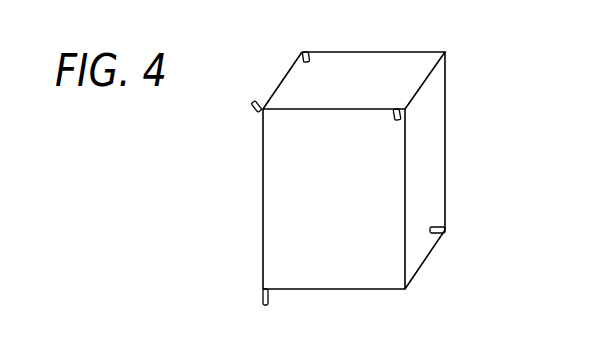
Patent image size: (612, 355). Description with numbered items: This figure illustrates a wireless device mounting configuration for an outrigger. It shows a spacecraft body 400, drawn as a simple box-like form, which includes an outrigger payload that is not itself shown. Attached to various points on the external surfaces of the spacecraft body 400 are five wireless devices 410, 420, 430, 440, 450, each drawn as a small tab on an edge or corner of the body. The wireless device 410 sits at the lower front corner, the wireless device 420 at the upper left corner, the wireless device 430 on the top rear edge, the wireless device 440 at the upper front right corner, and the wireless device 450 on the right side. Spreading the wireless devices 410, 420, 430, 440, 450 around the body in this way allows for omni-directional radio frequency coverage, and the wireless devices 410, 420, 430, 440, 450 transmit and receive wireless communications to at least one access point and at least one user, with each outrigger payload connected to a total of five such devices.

The spacecraft body 400 is at (354, 206).
The wireless device 410 is at (262, 294).
The wireless device 420 is at (256, 108).
The wireless device 430 is at (316, 50).
The wireless device 440 is at (397, 114).
The wireless device 450 is at (445, 224).